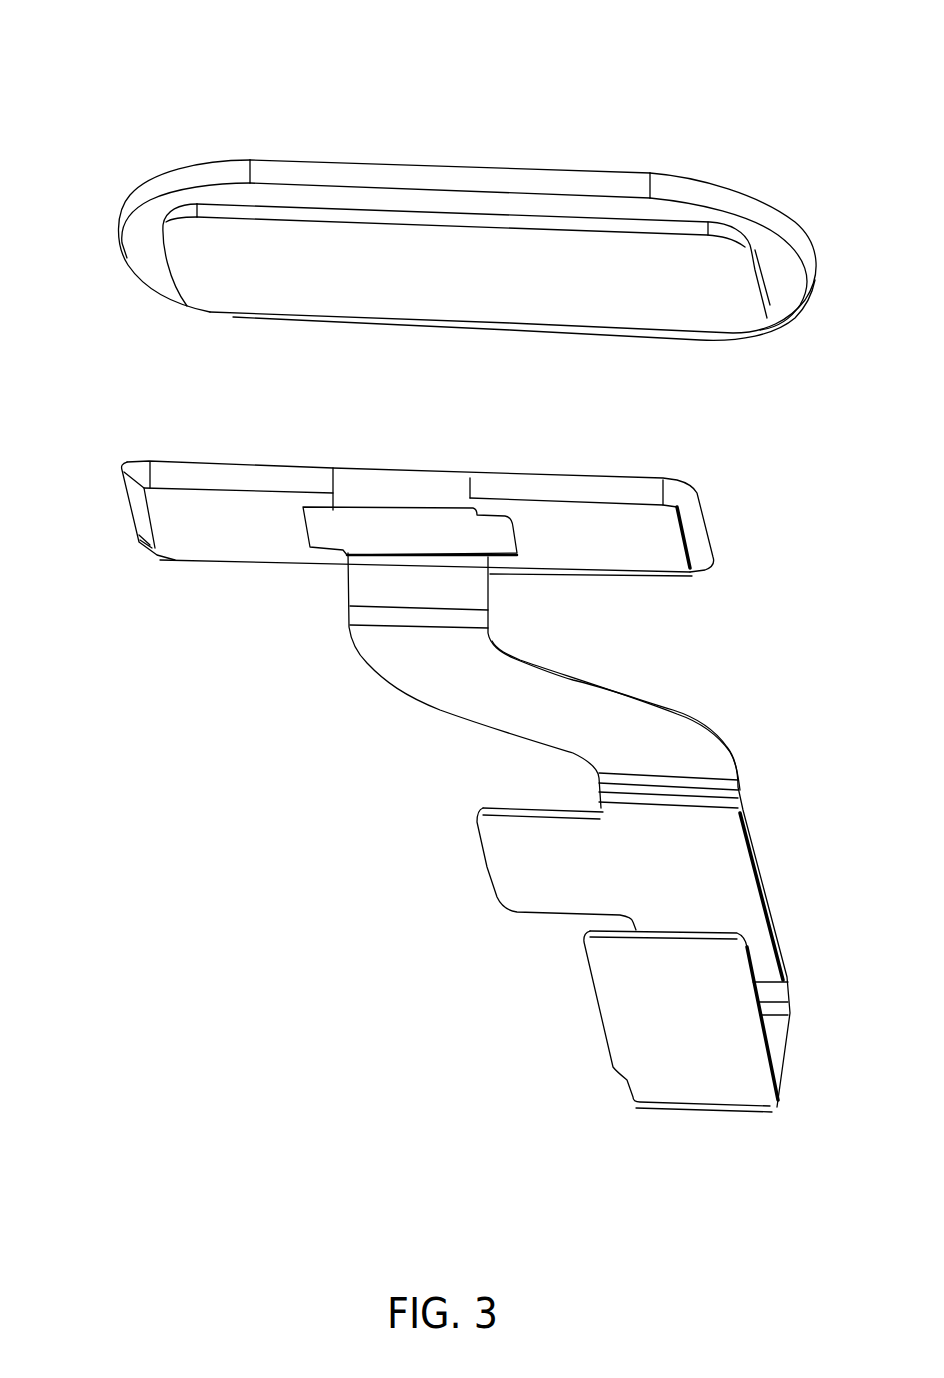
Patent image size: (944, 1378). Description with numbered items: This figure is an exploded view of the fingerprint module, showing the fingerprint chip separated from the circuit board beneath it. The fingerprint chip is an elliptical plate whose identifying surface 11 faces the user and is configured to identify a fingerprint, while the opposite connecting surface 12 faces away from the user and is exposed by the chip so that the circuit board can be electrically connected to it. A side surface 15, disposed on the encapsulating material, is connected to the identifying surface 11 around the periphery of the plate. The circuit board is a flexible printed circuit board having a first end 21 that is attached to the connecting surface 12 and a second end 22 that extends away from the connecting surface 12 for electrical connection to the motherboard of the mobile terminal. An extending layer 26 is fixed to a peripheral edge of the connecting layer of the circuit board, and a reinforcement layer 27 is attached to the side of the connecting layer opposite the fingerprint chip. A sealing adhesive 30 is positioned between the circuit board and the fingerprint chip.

The identifying surface 11 is at (598, 172).
The connecting surface 12 is at (290, 290).
The side surface 15 is at (220, 178).
The first end 21 is at (300, 580).
The second end 22 is at (563, 1035).
The extending layer 26 is at (370, 478).
The reinforcement layer 27 is at (203, 530).
The sealing adhesive 30 is at (580, 490).